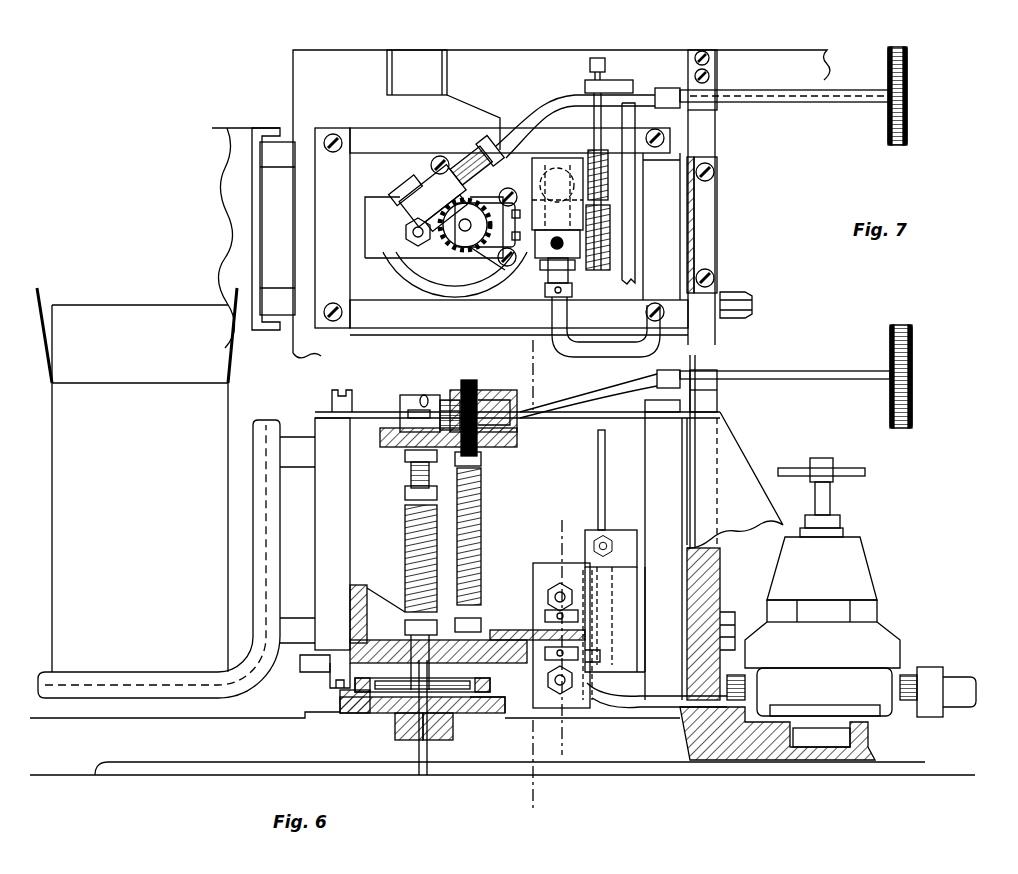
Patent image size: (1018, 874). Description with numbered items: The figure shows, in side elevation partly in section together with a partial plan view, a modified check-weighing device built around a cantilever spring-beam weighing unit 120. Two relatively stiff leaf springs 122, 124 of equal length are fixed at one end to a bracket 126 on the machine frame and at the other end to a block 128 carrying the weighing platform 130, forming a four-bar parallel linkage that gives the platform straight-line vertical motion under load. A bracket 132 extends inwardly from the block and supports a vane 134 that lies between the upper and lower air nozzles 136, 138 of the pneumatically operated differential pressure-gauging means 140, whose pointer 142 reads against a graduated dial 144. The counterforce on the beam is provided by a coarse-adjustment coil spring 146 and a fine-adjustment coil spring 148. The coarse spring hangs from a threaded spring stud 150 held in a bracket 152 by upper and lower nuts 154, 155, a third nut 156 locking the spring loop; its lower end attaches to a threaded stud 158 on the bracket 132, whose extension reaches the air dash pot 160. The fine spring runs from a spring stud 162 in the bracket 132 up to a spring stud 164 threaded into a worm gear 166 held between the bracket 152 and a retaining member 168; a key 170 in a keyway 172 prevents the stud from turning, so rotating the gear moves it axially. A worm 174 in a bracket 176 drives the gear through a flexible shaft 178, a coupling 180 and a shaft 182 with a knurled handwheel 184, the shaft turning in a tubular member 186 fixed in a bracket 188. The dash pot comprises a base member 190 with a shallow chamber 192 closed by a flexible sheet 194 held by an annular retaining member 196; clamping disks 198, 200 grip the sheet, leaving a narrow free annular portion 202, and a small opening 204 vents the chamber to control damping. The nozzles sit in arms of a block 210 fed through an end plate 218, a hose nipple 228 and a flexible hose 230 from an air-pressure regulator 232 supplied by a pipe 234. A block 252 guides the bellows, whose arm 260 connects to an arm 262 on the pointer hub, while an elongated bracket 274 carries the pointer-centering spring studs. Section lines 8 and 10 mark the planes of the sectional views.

In FIG. 6, the section line 8- 8 is at (546, 353).
In FIG. 6, the section line 10- 10 is at (578, 513).
In FIG. 7, the cantilever spring-beam weighing unit 120 is at (310, 125).
In FIG. 6, the cantilever spring-beam weighing unit 120 is at (365, 392).
In FIG. 7, the cantilever leaf spring 122 is at (365, 128).
In FIG. 6, the cantilever leaf spring 122 is at (330, 412).
In FIG. 6, the cantilever leaf spring 124 is at (330, 666).
In FIG. 7, the bracket 126 is at (668, 252).
In FIG. 6, the bracket 126 is at (670, 498).
In FIG. 7, the block 128 is at (315, 211).
In FIG. 6, the block 128 is at (280, 527).
In FIG. 7, the weighing platform 130 is at (225, 155).
In FIG. 6, the weighing platform 130 is at (183, 672).
In FIG. 7, the bracket 132 is at (352, 240).
In FIG. 6, the bracket 132 is at (358, 590).
In FIG. 7, the vane 134 is at (548, 265).
In FIG. 6, the vane 134 is at (540, 630).
In FIG. 6, the upper air nozzle 136 is at (545, 595).
In FIG. 6, the lower air nozzle 138 is at (587, 656).
In FIG. 7, the pneumatically operated differential pressure-gauging means 140 is at (530, 158).
In FIG. 6, the pneumatically operated differential pressure-gauging means 140 is at (545, 562).
In FIG. 7, the pointer 142 is at (630, 222).
In FIG. 6, the pointer 142 is at (598, 462).
In FIG. 7, the dial 144 is at (700, 222).
In FIG. 6, the dial 144 is at (700, 362).
In FIG. 6, the coarse-adjustment coil spring 146 is at (405, 530).
In FIG. 6, the fine-adjustment coil spring 148 is at (482, 500).
In FIG. 7, the threaded spring stud 150 is at (405, 225).
In FIG. 6, the threaded spring stud 150 is at (411, 475).
In FIG. 7, the bracket 152 is at (418, 96).
In FIG. 6, the bracket 152 is at (380, 436).
In FIG. 6, the upper nut 154 is at (397, 413).
In FIG. 6, the lower nut 155 is at (405, 456).
In FIG. 6, the third nut 156 is at (405, 494).
In FIG. 6, the threaded stud 158 is at (405, 630).
In FIG. 6, the air dash pot 160 is at (328, 710).
In FIG. 6, the spring stud 162 is at (478, 645).
In FIG. 7, the spring stud 164 is at (470, 214).
In FIG. 6, the spring stud 164 is at (482, 460).
In FIG. 7, the worm gear 166 is at (450, 258).
In FIG. 6, the worm gear 166 is at (498, 392).
In FIG. 7, the retaining member 168 is at (492, 272).
In FIG. 6, the retaining member 168 is at (518, 428).
In FIG. 7, the key 170 is at (470, 287).
In FIG. 6, the keyway 172 is at (466, 380).
In FIG. 7, the worm 174 is at (420, 182).
In FIG. 6, the worm 174 is at (445, 398).
In FIG. 7, the bracket 176 is at (438, 160).
In FIG. 6, the bracket 176 is at (405, 395).
In FIG. 7, the flexible shaft 178 is at (549, 105).
In FIG. 6, the flexible shaft 178 is at (598, 392).
In FIG. 7, the coupling 180 is at (660, 88).
In FIG. 6, the coupling 180 is at (672, 370).
In FIG. 7, the shaft 182 is at (776, 104).
In FIG. 7, the knurled handwheel 184 is at (908, 82).
In FIG. 6, the knurled handwheel 184 is at (905, 325).
In FIG. 7, the tubular member 186 is at (842, 90).
In FIG. 6, the tubular member 186 is at (795, 371).
In FIG. 7, the bracket 188 is at (717, 82).
In FIG. 6, the bracket 188 is at (717, 398).
In FIG. 6, the base member 190 is at (355, 713).
In FIG. 6, the chamber 192 is at (395, 730).
In FIG. 6, the flexible sheet 194 is at (480, 706).
In FIG. 6, the annular retaining member 196 is at (490, 684).
In FIG. 6, the upper clamping disk 198 is at (438, 651).
In FIG. 6, the lower clamping disk 200 is at (455, 706).
In FIG. 6, the annular portion 202 is at (318, 672).
In FIG. 6, the opening 204 is at (426, 762).
In FIG. 7, the block 210 is at (598, 268).
In FIG. 6, the block 210 is at (628, 592).
In FIG. 7, the end plate 218 is at (545, 292).
In FIG. 7, the hose nipple 228 is at (645, 311).
In FIG. 7, the flexible hose 230 is at (640, 340).
In FIG. 6, the flexible hose 230 is at (628, 708).
In FIG. 6, the air-pressure regulator 232 is at (868, 570).
In FIG. 6, the pipe 234 is at (945, 668).
In FIG. 7, the block 252 is at (495, 135).
In FIG. 7, the arm 260 is at (558, 158).
In FIG. 7, the arm 262 is at (608, 180).
In FIG. 7, the elongated bracket 274 is at (606, 65).